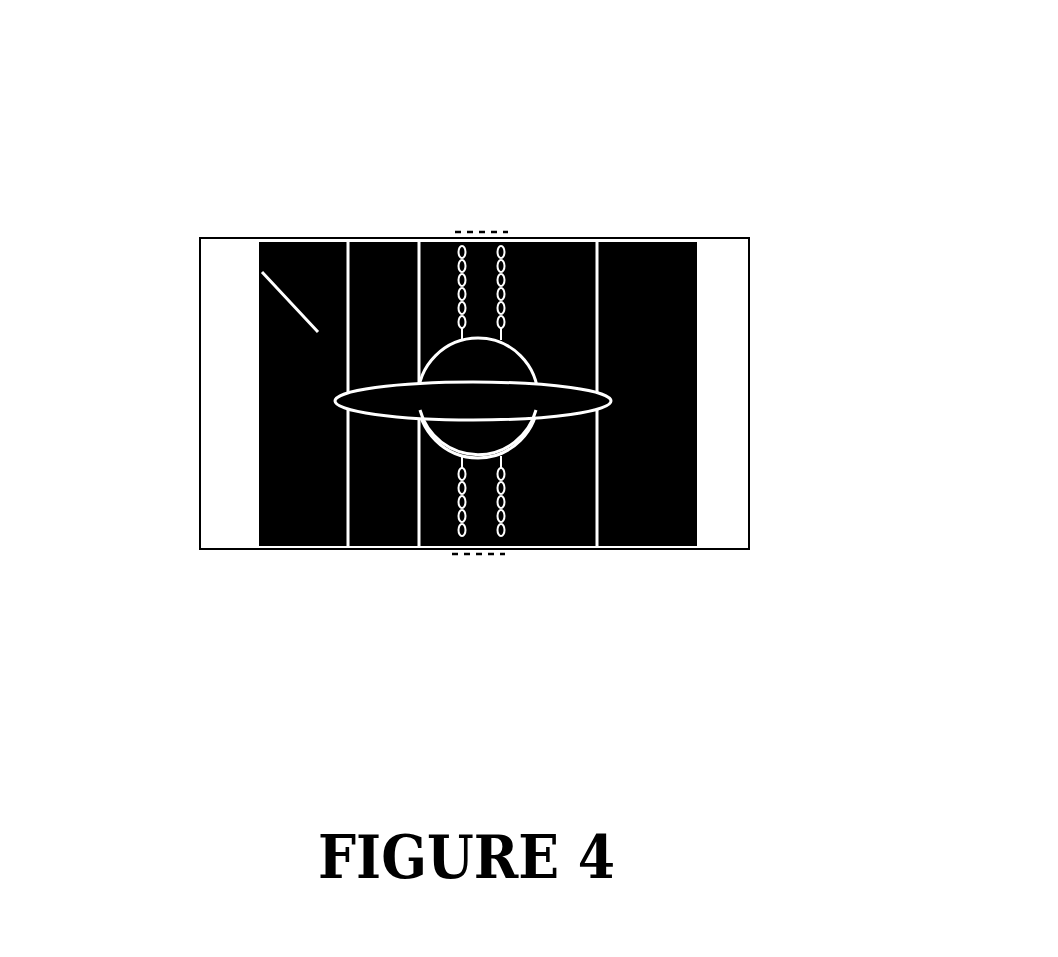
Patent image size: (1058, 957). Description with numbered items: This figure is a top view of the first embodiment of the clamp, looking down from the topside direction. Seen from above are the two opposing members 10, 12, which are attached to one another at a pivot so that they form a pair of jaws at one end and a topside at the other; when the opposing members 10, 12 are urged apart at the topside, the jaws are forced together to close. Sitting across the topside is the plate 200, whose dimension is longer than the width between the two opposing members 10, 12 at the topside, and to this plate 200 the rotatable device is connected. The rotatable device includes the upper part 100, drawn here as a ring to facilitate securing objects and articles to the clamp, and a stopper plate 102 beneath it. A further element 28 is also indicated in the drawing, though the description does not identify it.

The opposing member 10 is at (217, 443).
The opposing member 12 is at (725, 335).
The dashed chain line 28 is at (477, 527).
The upper part 100 is at (470, 385).
The stopper plate 102 is at (475, 443).
The plate 200 is at (262, 272).